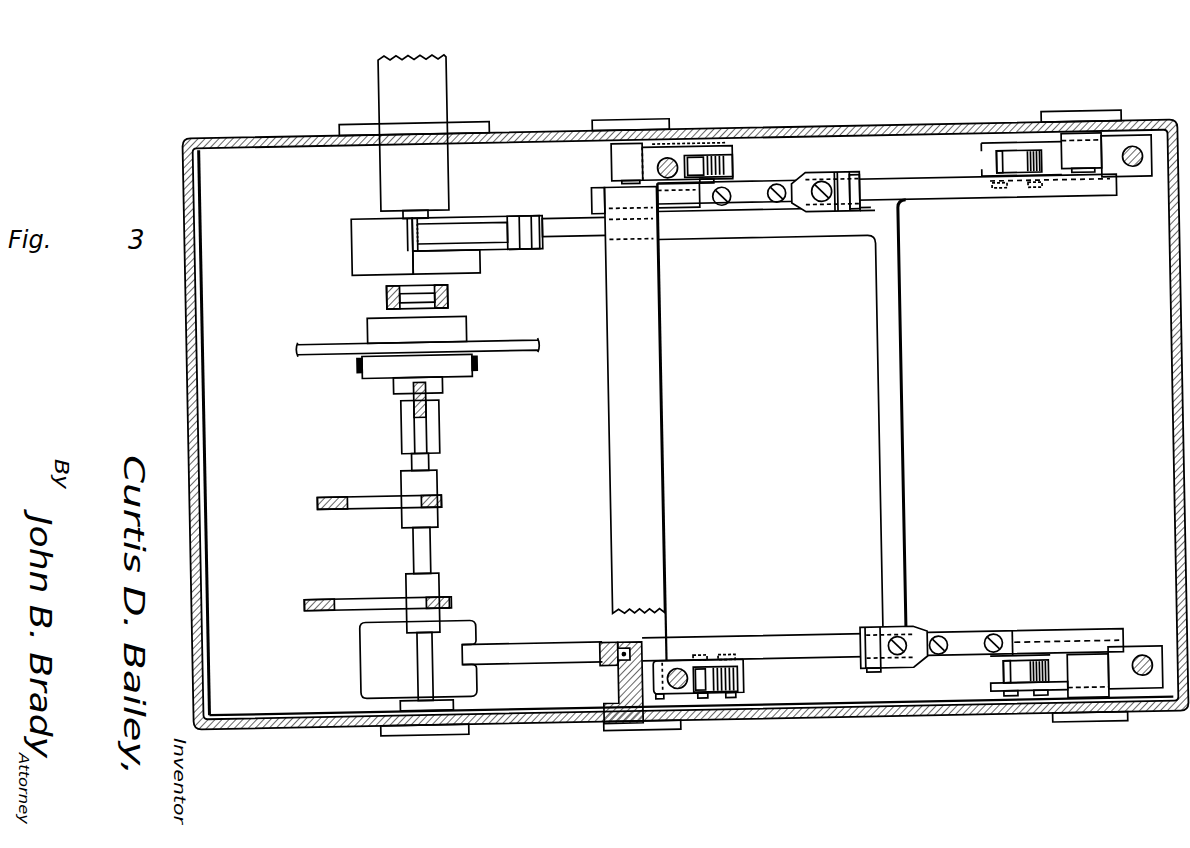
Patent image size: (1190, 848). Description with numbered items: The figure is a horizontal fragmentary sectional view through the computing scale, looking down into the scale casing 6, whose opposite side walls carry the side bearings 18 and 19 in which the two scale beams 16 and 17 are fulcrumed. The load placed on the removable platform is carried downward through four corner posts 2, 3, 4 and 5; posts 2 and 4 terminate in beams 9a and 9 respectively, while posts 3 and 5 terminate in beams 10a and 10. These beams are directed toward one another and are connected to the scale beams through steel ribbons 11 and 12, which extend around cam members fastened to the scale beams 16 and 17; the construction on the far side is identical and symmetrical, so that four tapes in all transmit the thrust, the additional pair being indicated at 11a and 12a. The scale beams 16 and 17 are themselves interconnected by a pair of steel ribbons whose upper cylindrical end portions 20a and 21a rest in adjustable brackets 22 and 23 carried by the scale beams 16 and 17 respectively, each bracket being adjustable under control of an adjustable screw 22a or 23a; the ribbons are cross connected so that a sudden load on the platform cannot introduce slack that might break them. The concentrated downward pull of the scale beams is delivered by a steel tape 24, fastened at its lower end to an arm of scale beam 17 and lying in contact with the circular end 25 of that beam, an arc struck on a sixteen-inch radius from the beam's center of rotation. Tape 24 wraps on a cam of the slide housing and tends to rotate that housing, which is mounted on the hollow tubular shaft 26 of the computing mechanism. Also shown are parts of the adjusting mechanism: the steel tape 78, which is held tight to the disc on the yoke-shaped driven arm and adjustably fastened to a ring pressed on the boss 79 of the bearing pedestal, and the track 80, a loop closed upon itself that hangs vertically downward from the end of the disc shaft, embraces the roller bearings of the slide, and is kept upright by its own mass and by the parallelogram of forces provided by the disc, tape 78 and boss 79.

The post 2 is at (675, 159).
The post 3 is at (1133, 178).
The post 4 is at (681, 667).
The post 5 is at (1143, 650).
The scale casing 6 is at (205, 447).
The beam 9 is at (672, 694).
The beam 9a is at (662, 158).
The beam 10 is at (1127, 678).
The beam 10a is at (1121, 143).
The steel ribbon 11 is at (713, 682).
The tape 11a is at (730, 165).
The steel ribbon 12 is at (1028, 677).
The tape 12a is at (1008, 162).
The scale beam 16 is at (686, 200).
The scale beam 17 is at (580, 235).
The side bearing 18 is at (612, 161).
The side bearing 19 is at (1076, 147).
The upper cylindrical end portion 20a is at (842, 177).
The upper cylindrical end portion 21a is at (873, 669).
The adjustable bracket 22 is at (822, 177).
The adjustable screw 22a is at (823, 206).
The adjustable bracket 23 is at (459, 636).
The adjustable screw 23a is at (896, 637).
The steel tape 24 is at (473, 232).
The circular end 25 is at (533, 243).
The hollow shaft 26 is at (421, 209).
The steel tape 78 is at (358, 366).
The boss 79 is at (386, 372).
The track 80 is at (385, 298).